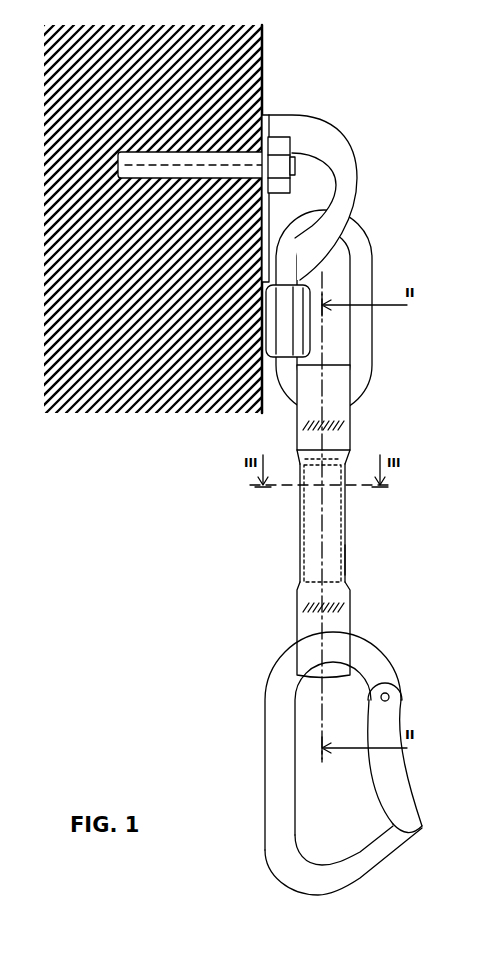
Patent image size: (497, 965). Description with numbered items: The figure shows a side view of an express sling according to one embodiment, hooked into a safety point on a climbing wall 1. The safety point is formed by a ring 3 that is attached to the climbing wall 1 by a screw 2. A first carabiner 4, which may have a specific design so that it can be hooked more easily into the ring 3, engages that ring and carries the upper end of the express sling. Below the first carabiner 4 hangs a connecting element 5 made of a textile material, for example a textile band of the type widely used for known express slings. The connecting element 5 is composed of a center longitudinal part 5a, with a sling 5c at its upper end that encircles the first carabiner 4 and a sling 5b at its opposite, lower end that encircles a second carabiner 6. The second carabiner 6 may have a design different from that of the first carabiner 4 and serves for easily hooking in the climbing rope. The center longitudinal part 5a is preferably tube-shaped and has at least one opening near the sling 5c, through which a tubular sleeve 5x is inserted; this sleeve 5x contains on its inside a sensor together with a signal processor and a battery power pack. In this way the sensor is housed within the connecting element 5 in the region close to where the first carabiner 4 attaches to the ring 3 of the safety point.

The climbing wall 1 is at (98, 390).
The screw 2 is at (203, 153).
The ring 3 is at (323, 143).
The first carabiner 4 is at (360, 247).
The connecting element 5 is at (344, 521).
The center longitudinal part 5a is at (313, 533).
The sling 5b is at (313, 623).
The sling 5c is at (307, 402).
The tubular sleeve 5x is at (345, 560).
The second carabiner 6 is at (367, 663).